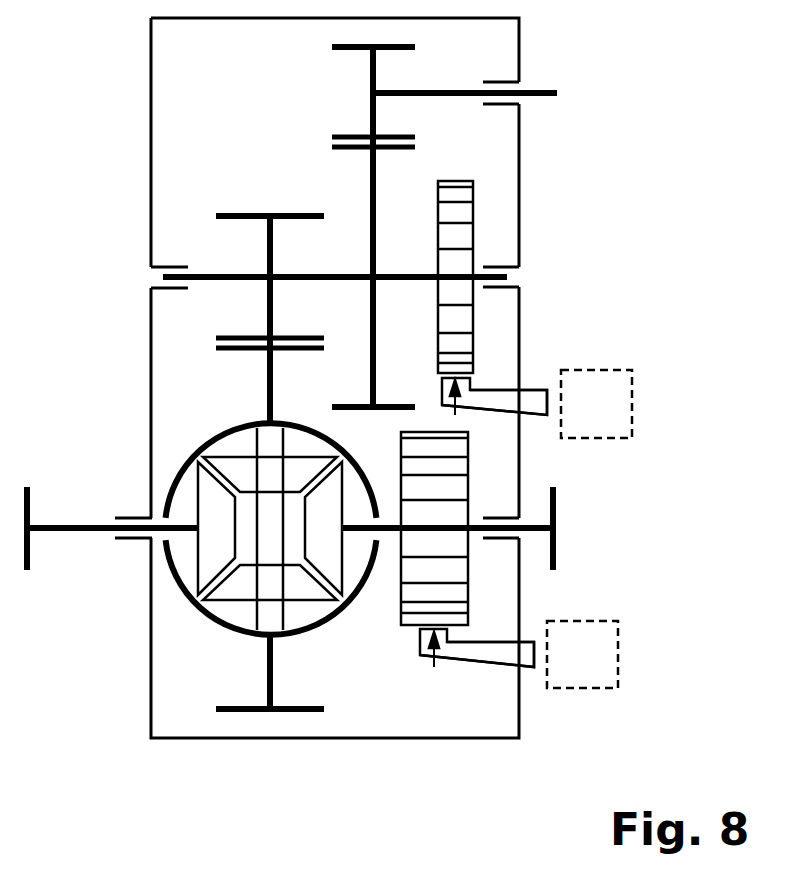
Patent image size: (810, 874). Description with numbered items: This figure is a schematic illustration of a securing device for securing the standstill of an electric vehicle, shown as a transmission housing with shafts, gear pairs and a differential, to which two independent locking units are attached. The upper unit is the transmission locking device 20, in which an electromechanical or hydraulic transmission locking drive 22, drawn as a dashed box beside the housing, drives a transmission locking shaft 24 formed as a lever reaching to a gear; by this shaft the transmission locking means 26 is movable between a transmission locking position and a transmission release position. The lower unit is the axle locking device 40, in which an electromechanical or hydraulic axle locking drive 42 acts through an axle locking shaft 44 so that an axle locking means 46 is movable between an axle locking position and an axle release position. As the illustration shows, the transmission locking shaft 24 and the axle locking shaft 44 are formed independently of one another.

The transmission locking device 20 is at (563, 299).
The transmission locking drive 22 is at (632, 403).
The transmission locking shaft 24 is at (532, 405).
The transmission locking means 26 is at (469, 383).
The axle locking device 40 is at (470, 691).
The axle locking drive 42 is at (618, 653).
The axle locking shaft 44 is at (525, 660).
The axle locking means 46 is at (445, 637).